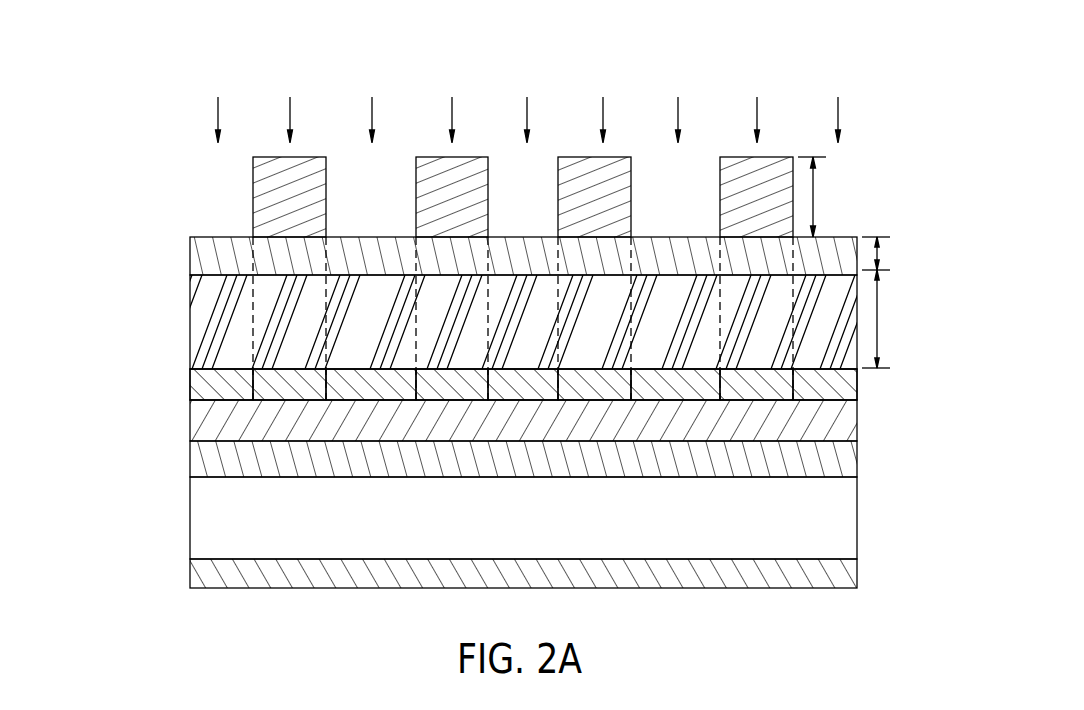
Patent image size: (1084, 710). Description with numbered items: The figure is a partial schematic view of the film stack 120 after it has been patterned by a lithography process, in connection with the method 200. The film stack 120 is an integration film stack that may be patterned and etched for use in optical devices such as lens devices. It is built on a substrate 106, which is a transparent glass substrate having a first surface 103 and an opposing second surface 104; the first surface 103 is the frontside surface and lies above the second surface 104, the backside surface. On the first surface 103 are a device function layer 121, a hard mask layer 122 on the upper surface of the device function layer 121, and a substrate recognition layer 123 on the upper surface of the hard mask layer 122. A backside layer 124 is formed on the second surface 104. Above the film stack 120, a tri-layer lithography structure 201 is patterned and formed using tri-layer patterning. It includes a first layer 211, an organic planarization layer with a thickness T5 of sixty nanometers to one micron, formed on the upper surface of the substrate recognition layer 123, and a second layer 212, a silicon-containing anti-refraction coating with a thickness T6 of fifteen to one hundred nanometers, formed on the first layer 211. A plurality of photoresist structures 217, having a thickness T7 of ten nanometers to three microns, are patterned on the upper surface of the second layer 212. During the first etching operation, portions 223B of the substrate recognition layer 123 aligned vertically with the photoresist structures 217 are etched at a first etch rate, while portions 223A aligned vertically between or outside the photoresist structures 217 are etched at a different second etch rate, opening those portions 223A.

The method 200 is at (858, 52).
The tri-layer lithography structure 201 is at (866, 167).
The photoresist structures 217 is at (302, 173).
The second layer 212 is at (201, 253).
The first layer 211 is at (201, 313).
The portions of the substrate recognition layer 223A is at (215, 378).
The portions of the substrate recognition layer 223B is at (523, 384).
The substrate recognition layer 123 is at (176, 383).
The hard mask layer 122 is at (201, 418).
The device function layer 121 is at (201, 456).
The first surface 103 is at (234, 480).
The film stack 120 is at (140, 515).
The second surface 104 is at (242, 558).
The backside layer 124 is at (201, 572).
The substrate 106 is at (827, 507).
The thickness of the photoresist structures T7 is at (814, 192).
The thickness of the second layer T6 is at (878, 250).
The thickness of the first layer T5 is at (878, 315).